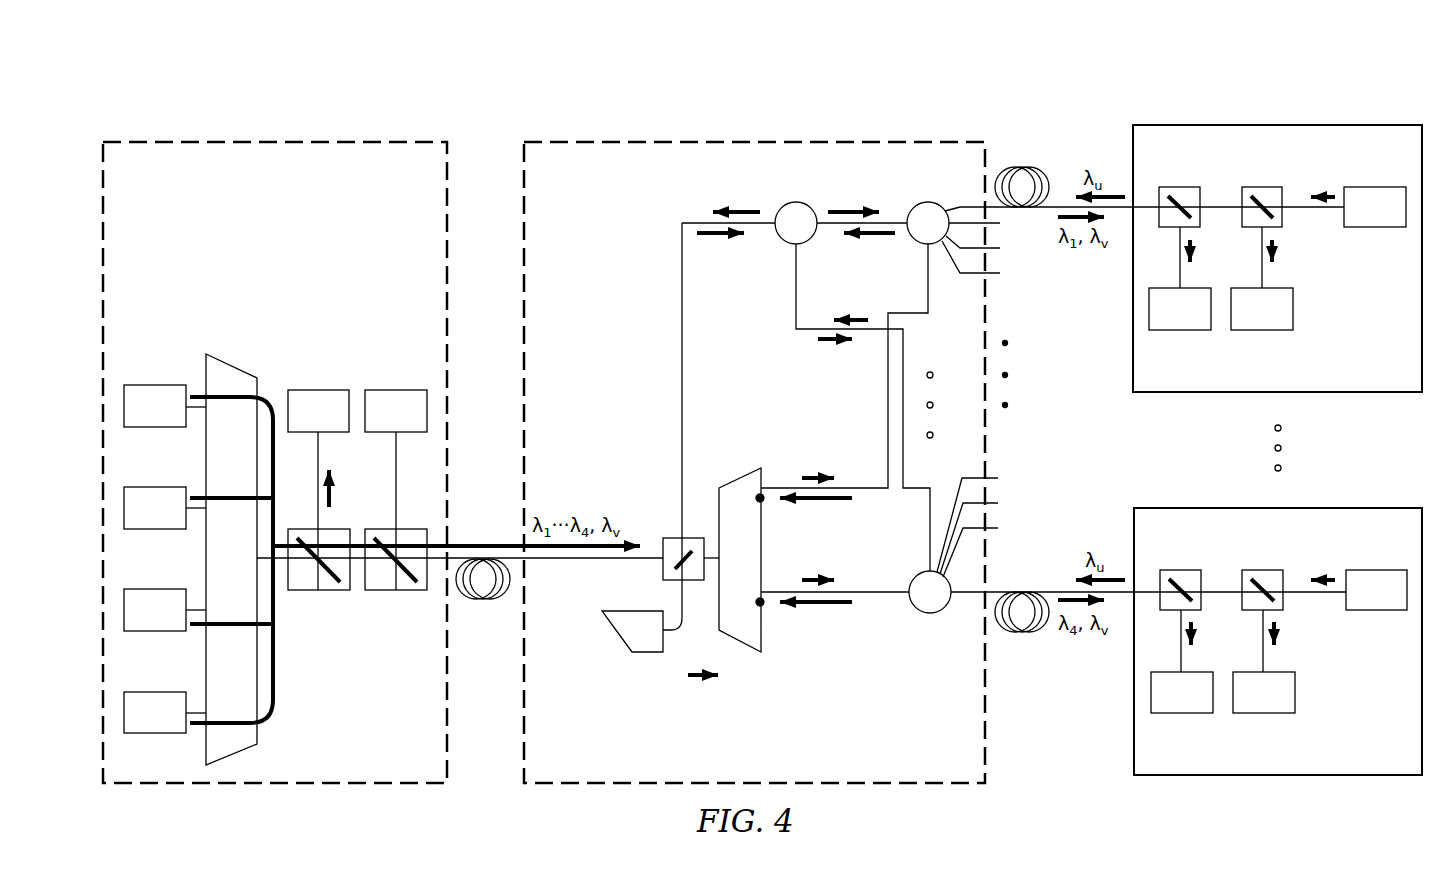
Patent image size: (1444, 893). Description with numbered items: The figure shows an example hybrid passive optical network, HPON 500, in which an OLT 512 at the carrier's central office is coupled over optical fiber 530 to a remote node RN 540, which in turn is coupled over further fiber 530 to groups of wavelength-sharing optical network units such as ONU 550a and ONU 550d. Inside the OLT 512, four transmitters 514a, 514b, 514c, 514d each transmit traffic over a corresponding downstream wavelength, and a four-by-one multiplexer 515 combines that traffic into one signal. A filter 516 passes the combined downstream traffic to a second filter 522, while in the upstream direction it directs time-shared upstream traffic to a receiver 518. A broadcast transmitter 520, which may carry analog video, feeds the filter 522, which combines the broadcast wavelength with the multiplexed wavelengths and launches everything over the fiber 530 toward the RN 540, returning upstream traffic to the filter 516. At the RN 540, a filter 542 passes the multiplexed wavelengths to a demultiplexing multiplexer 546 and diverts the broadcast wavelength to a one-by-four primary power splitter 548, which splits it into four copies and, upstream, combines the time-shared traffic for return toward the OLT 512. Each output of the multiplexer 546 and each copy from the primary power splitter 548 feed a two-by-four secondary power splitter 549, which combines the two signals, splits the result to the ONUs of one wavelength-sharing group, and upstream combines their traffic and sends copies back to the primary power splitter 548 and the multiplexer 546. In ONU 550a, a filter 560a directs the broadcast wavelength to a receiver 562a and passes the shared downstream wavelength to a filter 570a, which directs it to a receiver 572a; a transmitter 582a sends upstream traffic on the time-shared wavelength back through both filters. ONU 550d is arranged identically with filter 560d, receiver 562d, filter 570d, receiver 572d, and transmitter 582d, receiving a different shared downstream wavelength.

The HPON 500 is at (976, 96).
The OLT 512 is at (291, 244).
The transmitter 514a is at (152, 385).
The transmitter 514b is at (152, 487).
The transmitter 514c is at (152, 589).
The transmitter 514d is at (152, 692).
The multiplexer 515 is at (237, 354).
The filter 516 is at (313, 590).
The receiver 518 is at (305, 390).
The transmitter 520 is at (405, 390).
The filter 522 is at (398, 590).
The optical fiber 530 is at (490, 600).
The RN 540 is at (856, 140).
The filter 542 is at (663, 568).
The multiplexer 546 is at (740, 470).
The primary power splitter 548 is at (785, 203).
The secondary power splitter 549 is at (938, 203).
The ONU 550a is at (1340, 124).
The ONU 550d is at (1347, 778).
The filter 560a is at (1180, 188).
The filter 570a is at (1262, 188).
The transmitter 582a is at (1375, 228).
The receiver 562a is at (1193, 330).
The receiver 572a is at (1275, 330).
The filter 560d is at (1181, 570).
The filter 570d is at (1263, 570).
The transmitter 582d is at (1377, 610).
The receiver 562d is at (1193, 713).
The receiver 572d is at (1277, 713).